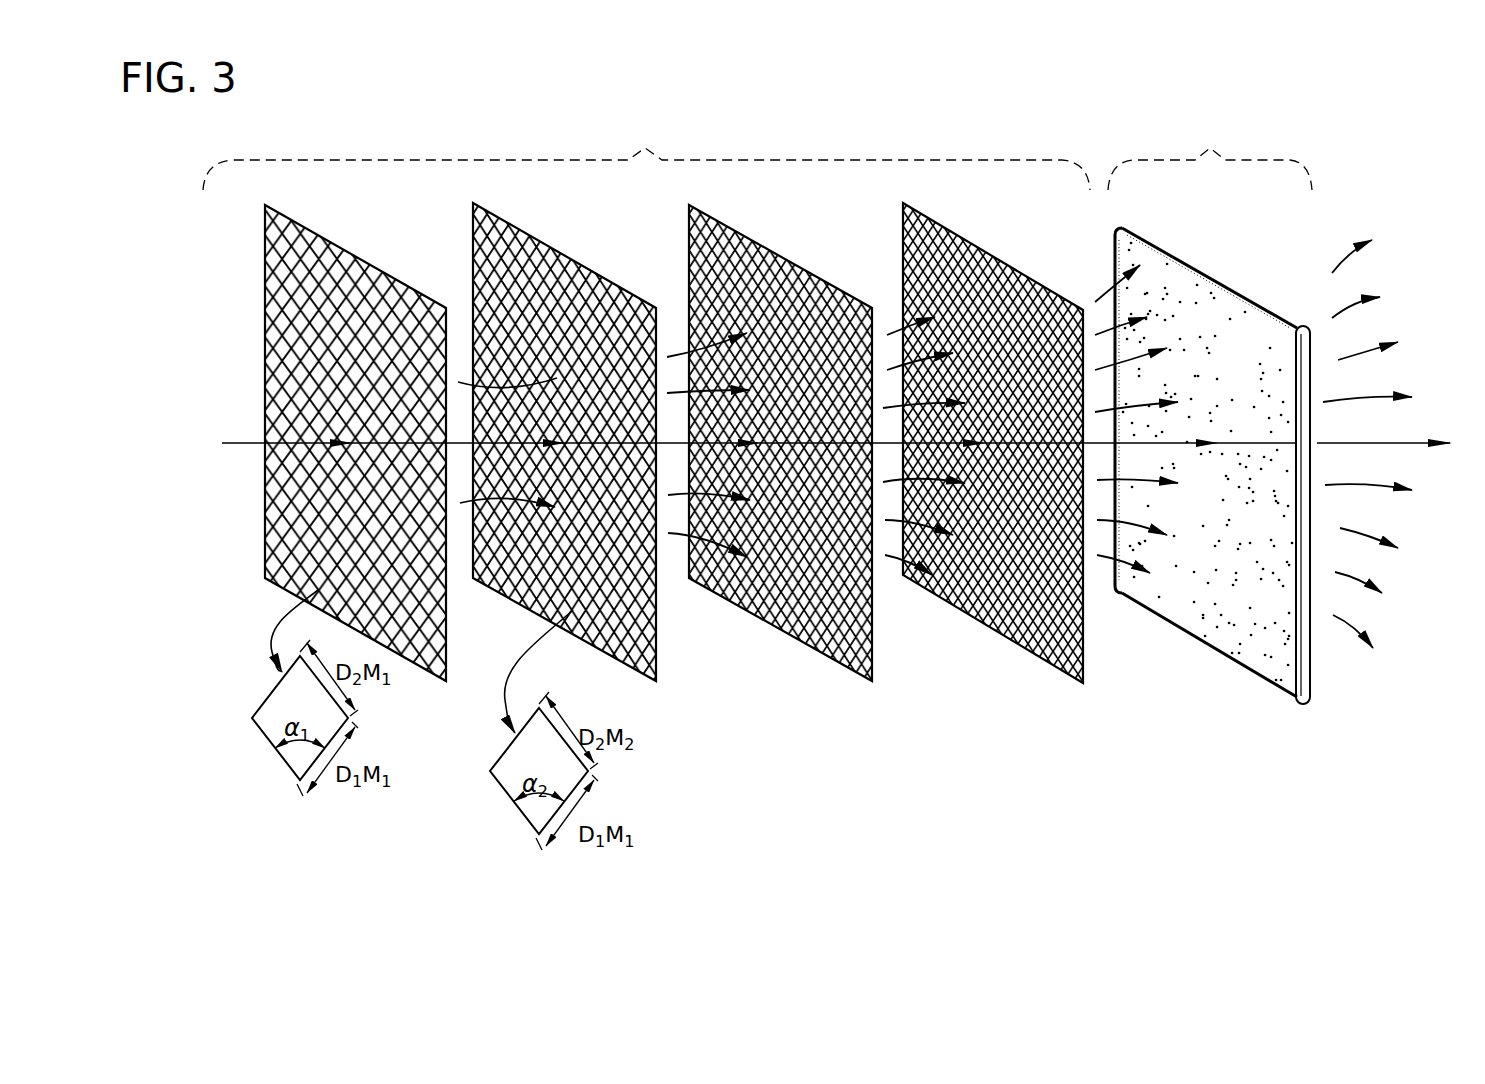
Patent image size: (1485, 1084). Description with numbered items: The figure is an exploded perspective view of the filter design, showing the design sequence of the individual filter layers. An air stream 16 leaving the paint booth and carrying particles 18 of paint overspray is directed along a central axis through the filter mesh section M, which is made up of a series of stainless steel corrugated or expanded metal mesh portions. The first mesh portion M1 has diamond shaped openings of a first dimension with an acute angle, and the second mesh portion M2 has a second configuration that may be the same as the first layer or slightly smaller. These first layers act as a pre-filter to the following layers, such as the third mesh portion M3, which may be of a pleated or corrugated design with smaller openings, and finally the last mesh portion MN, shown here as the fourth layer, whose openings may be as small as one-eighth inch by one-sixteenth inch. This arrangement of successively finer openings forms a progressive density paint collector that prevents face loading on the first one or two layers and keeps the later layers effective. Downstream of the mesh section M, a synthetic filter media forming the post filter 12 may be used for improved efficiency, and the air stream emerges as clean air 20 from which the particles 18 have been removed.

The post filter 12 is at (1203, 408).
The air stream 16 is at (243, 443).
The particles 18 is at (678, 435).
The clean air 20 is at (1408, 443).
The filter mesh section M is at (646, 151).
The first mesh portion M1 is at (308, 228).
The second mesh portion M2 is at (517, 227).
The third mesh portion M3 is at (732, 228).
The final mesh portion MN is at (942, 228).